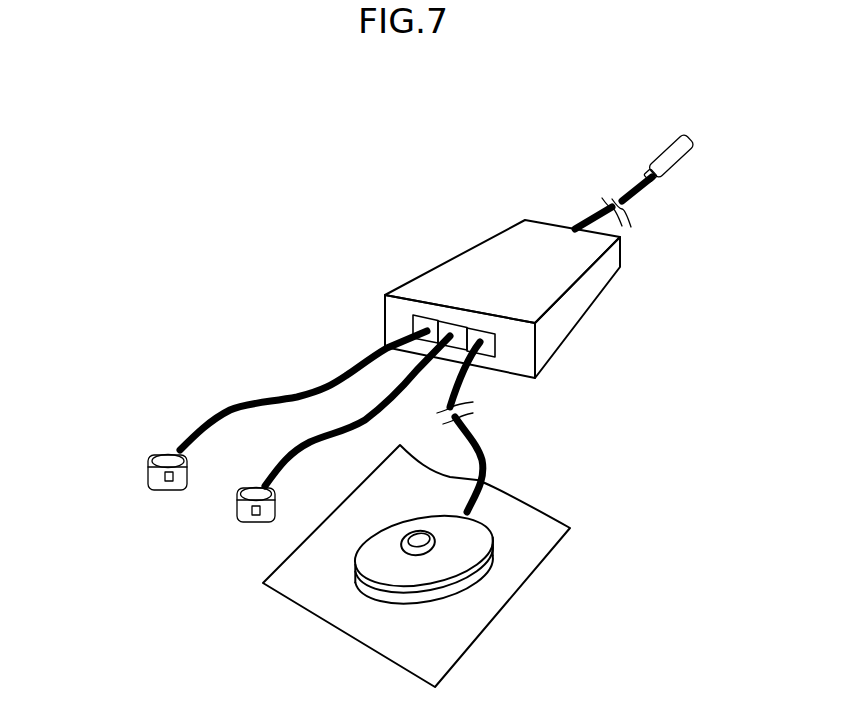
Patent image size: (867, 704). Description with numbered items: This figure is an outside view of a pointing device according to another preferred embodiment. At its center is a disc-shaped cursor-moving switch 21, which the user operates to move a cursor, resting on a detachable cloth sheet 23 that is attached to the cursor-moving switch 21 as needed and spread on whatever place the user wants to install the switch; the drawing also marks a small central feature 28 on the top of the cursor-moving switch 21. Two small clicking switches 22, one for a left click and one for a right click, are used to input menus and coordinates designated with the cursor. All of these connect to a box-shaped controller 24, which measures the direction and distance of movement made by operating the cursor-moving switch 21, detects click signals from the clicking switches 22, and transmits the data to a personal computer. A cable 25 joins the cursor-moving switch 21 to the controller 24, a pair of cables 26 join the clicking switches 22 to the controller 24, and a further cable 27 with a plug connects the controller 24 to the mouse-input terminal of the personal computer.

The cursor-moving switch 21 is at (463, 572).
The clicking switches 22 is at (247, 520).
The detachable cloth sheet 23 is at (527, 542).
The controller 24 is at (562, 320).
The cable 25 is at (483, 447).
The cable 26 is at (367, 417).
The cable 27 is at (630, 208).
The center hole of disc sensor 28 is at (405, 557).